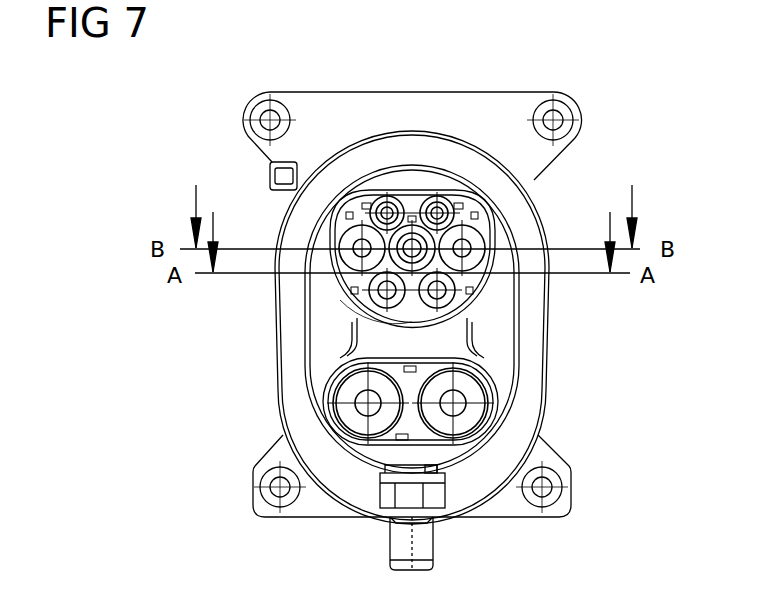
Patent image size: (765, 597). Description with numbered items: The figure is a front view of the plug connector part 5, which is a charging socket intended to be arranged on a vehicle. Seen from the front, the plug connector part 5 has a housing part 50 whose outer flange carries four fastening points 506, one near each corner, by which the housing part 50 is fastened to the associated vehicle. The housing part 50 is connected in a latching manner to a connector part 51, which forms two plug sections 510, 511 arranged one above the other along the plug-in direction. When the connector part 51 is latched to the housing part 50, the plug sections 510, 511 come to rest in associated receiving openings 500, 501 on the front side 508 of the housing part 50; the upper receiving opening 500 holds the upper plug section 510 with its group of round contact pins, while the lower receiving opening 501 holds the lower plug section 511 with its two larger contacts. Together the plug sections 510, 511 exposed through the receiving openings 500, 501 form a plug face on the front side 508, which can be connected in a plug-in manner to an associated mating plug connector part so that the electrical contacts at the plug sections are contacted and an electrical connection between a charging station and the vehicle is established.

The plug connector part 5 is at (603, 90).
The housing part 50 is at (560, 387).
The connector part 51 is at (507, 414).
The receiving opening 500 is at (338, 302).
The receiving opening 501 is at (333, 446).
The fastening points 506 is at (258, 123).
The front side 508 is at (533, 345).
The plug section 510 is at (352, 311).
The plug section 511 is at (364, 447).